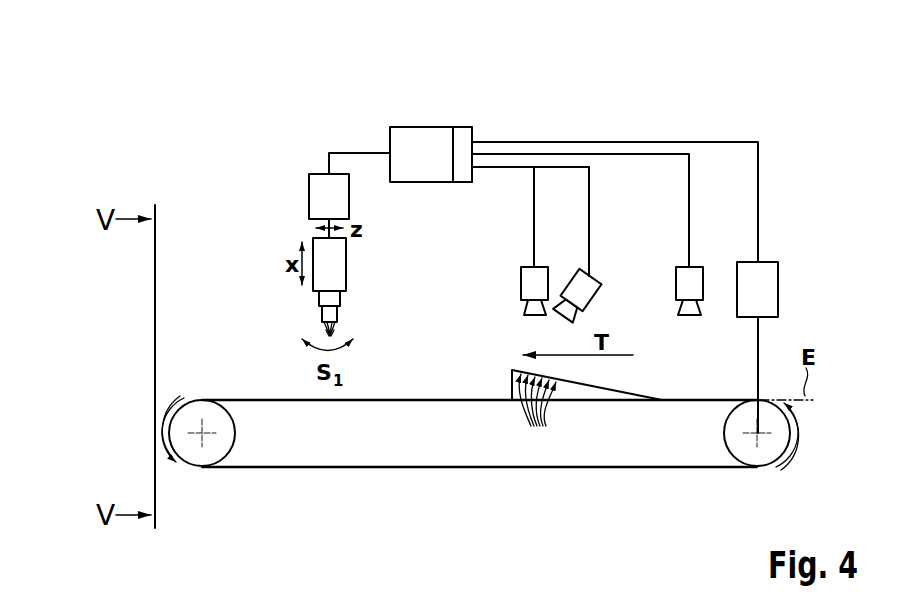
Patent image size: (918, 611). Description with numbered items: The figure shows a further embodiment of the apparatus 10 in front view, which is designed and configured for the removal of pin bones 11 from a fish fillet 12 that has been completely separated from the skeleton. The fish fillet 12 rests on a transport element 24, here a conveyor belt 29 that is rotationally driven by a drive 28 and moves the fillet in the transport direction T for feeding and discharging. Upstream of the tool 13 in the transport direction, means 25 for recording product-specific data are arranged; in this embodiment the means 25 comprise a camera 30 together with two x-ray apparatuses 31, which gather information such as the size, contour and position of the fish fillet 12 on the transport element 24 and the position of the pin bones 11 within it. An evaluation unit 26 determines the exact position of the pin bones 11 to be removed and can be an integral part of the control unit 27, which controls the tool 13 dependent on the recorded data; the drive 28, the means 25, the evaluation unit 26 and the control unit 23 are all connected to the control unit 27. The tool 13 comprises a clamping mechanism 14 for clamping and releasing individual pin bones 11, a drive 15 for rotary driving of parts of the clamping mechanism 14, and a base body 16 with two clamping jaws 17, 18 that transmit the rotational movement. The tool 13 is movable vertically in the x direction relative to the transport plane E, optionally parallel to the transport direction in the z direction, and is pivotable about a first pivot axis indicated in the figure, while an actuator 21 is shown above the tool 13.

The apparatus 10 is at (714, 106).
The pin bones 11 is at (537, 415).
The fish fillet 12 is at (596, 390).
The tool 13 is at (301, 317).
The clamping mechanism 14 is at (341, 327).
The drive 15 is at (344, 298).
The base body 16 is at (318, 310).
The clamping jaw 17 is at (324, 329).
The clamping jaw 18 is at (337, 330).
The print head actuator 21 is at (340, 253).
The control unit 23 is at (317, 193).
The transport element 24 is at (377, 473).
The means for recording product-specific data 25 is at (623, 256).
The evaluation unit 26 is at (461, 132).
The control unit 27 is at (405, 121).
The drive 28 is at (766, 289).
The conveyor belt 29 is at (482, 469).
The camera 30 is at (697, 272).
The x-ray apparatuses 31 is at (525, 283).